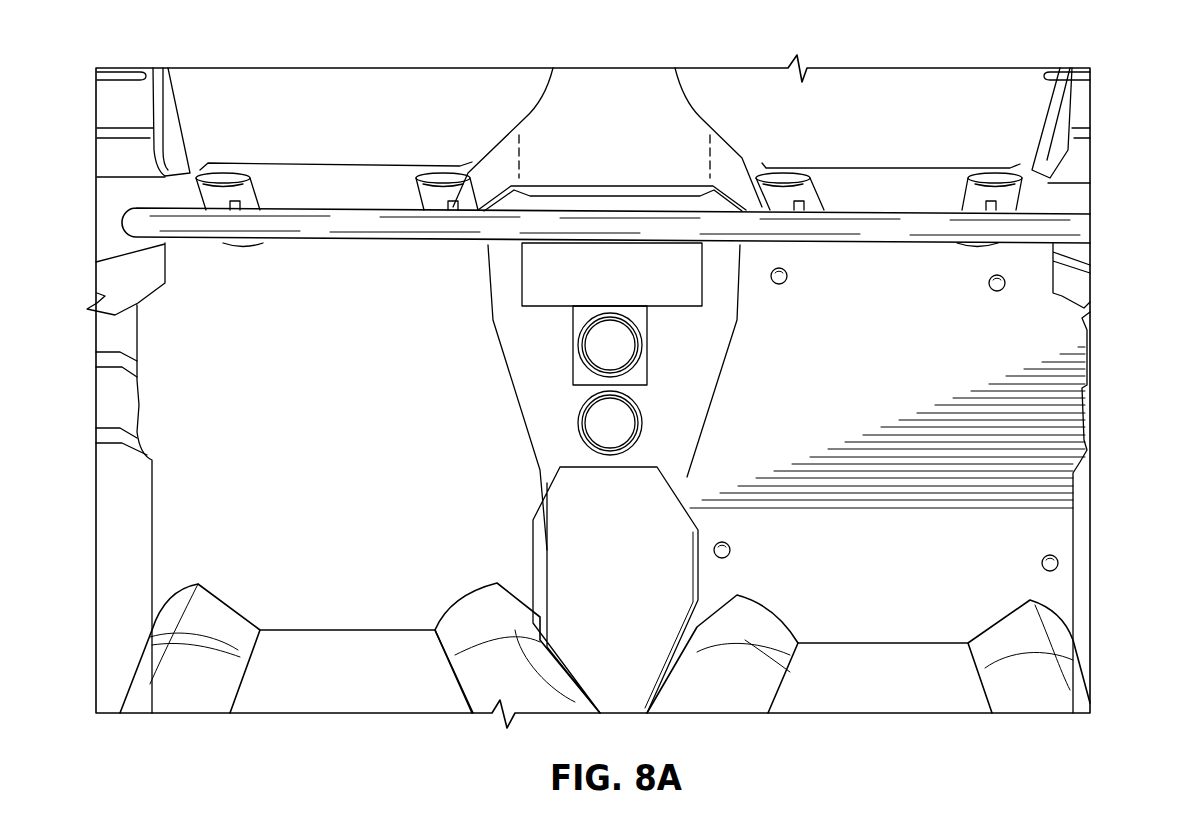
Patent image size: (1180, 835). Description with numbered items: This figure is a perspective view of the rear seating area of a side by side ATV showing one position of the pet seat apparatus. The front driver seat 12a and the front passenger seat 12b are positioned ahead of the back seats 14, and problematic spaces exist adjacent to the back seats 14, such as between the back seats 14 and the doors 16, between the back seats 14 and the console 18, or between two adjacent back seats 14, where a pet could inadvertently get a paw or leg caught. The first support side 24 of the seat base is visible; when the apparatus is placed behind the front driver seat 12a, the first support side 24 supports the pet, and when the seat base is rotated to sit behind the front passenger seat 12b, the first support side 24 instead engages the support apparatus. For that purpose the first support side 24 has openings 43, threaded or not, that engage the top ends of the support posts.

The front driver seat 12a is at (357, 92).
The front passenger seat 12b is at (862, 90).
The back seat 14 is at (1125, 624).
The door 16 is at (1125, 500).
The console 18 is at (698, 357).
The first support side 24 is at (878, 379).
The opening 43 is at (996, 307).